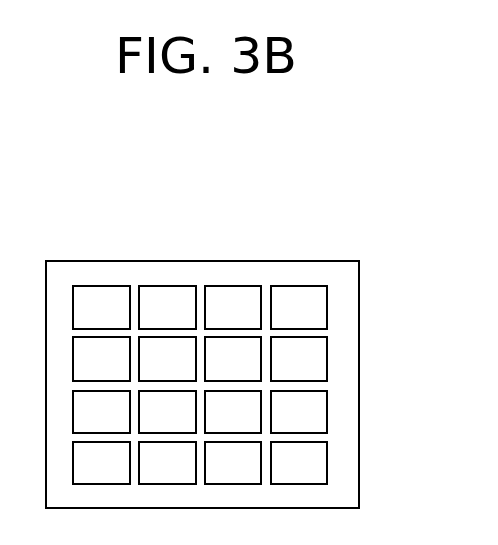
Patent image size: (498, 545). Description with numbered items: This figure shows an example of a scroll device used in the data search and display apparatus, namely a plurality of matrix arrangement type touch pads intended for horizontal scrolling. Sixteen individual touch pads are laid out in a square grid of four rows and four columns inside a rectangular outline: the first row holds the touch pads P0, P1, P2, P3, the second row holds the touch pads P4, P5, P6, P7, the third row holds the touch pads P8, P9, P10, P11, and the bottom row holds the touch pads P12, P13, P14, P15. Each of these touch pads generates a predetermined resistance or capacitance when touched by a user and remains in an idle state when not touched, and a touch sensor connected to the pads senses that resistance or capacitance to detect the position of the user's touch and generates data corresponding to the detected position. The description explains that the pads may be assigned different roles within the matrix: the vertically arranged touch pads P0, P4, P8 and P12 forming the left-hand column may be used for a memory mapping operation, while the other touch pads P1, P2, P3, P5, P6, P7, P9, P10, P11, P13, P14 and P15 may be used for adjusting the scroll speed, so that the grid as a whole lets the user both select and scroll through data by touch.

The touch pad P0 is at (101, 307).
The touch pad P1 is at (167, 307).
The touch pad P2 is at (233, 307).
The touch pad P3 is at (299, 307).
The touch pad P4 is at (101, 359).
The touch pad P5 is at (167, 359).
The touch pad P6 is at (233, 359).
The touch pad P7 is at (299, 359).
The touch pad P8 is at (101, 412).
The touch pad P9 is at (167, 412).
The touch pad P10 is at (233, 412).
The touch pad P11 is at (299, 412).
The touch pad P12 is at (101, 463).
The touch pad P13 is at (167, 463).
The touch pad P14 is at (233, 463).
The touch pad P15 is at (299, 463).